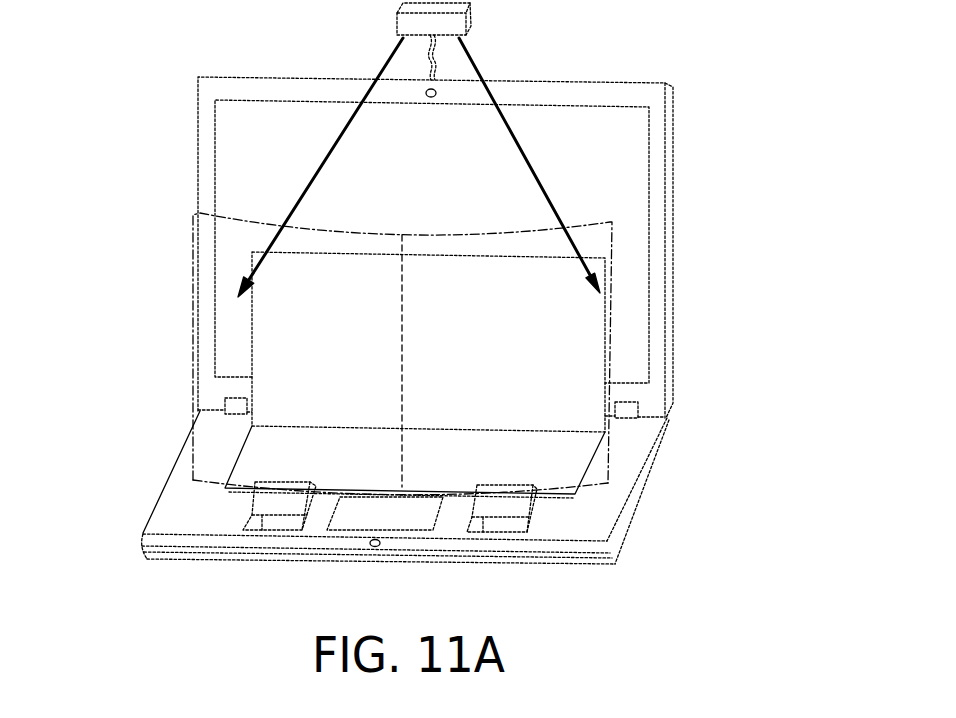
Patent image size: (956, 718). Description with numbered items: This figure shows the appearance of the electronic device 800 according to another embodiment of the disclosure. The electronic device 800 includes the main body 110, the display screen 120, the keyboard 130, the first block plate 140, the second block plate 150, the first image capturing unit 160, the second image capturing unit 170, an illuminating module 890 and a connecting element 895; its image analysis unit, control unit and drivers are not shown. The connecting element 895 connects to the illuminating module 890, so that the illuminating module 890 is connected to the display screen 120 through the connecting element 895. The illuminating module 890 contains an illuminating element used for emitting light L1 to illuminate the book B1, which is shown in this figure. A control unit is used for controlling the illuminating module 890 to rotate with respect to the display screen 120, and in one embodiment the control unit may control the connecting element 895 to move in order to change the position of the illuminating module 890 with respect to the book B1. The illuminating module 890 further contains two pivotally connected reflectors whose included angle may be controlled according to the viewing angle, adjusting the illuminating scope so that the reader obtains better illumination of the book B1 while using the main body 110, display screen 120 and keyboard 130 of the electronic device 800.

The electronic device 800 is at (127, 34).
The illuminating module 890 is at (384, 14).
The connecting element 895 is at (425, 64).
The first image capturing unit 160 is at (438, 93).
The display screen 120 is at (673, 160).
The keyboard 130 is at (606, 310).
The book B1 is at (617, 270).
The light L1 is at (419, 167).
The main body 110 is at (640, 483).
The second block plate 150 is at (283, 500).
The first block plate 140 is at (507, 500).
The second image capturing unit 170 is at (373, 548).